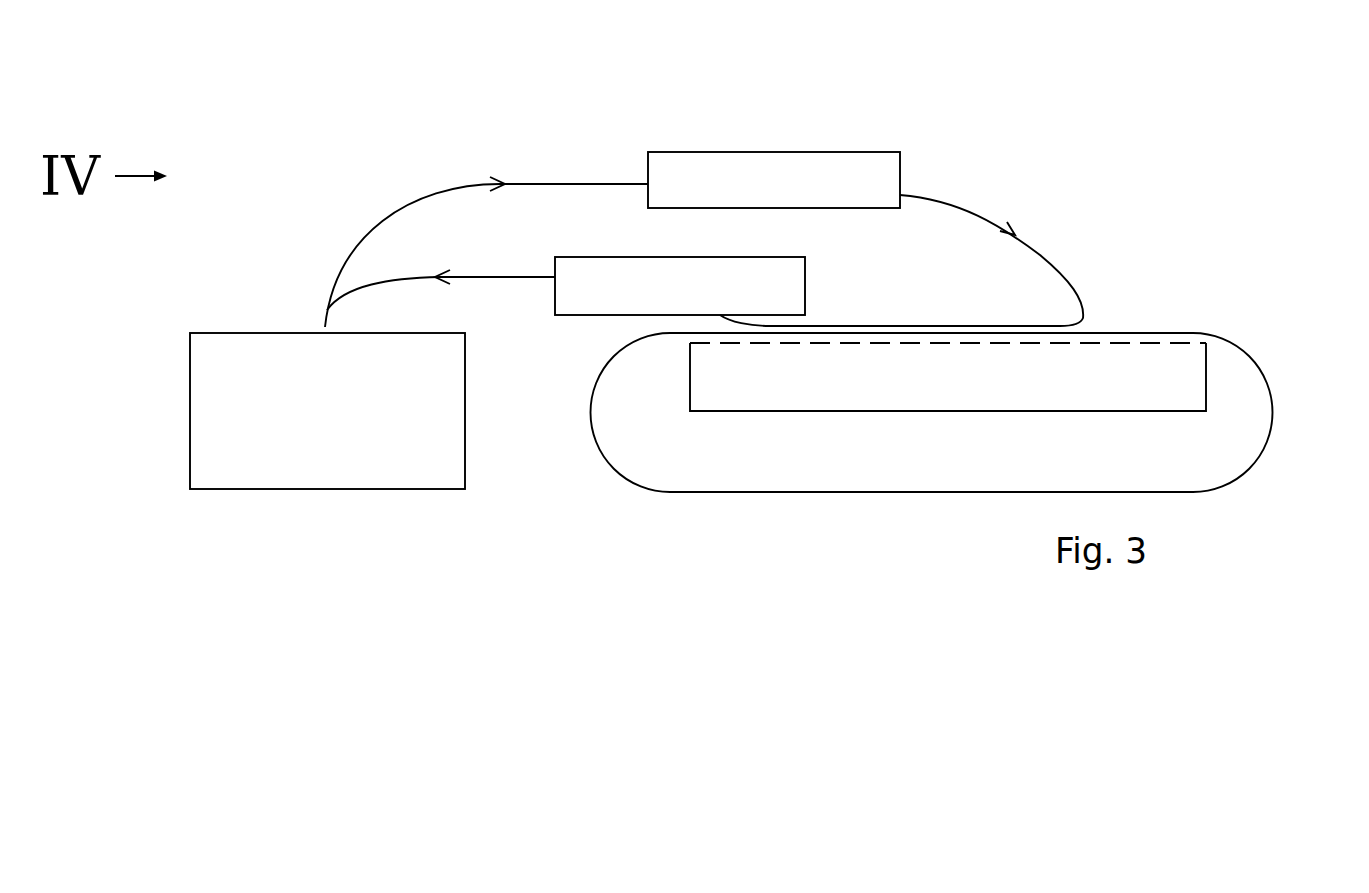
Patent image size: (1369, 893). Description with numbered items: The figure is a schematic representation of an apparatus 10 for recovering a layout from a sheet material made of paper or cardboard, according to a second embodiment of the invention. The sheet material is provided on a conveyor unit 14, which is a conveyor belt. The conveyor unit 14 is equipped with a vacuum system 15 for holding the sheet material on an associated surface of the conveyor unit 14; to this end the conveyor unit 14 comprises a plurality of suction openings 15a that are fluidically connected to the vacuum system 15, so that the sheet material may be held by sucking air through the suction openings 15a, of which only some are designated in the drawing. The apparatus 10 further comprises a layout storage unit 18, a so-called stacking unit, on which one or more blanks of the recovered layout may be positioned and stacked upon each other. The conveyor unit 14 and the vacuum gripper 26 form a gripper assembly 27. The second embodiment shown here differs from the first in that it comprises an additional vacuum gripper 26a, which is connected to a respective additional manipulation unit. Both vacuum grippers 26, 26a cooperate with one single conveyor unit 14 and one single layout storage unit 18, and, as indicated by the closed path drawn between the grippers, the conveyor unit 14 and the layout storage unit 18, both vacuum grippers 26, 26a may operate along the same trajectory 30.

The apparatus 10 is at (1182, 162).
The conveyor unit 14 is at (1253, 358).
The vacuum system 15 is at (1180, 412).
The suction openings 15a is at (1132, 326).
The layout storage unit 18 is at (272, 357).
The vacuum gripper 26 is at (823, 152).
The additional vacuum gripper 26a is at (593, 257).
The gripper assembly 27 is at (1257, 215).
The trajectory 30 is at (1047, 258).